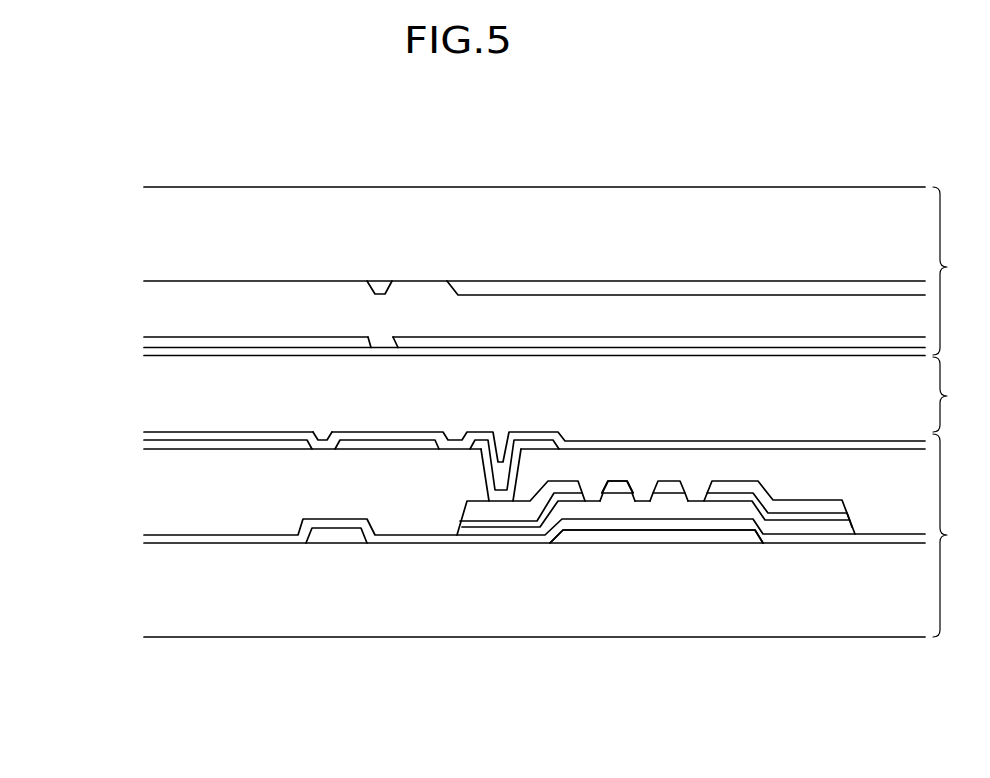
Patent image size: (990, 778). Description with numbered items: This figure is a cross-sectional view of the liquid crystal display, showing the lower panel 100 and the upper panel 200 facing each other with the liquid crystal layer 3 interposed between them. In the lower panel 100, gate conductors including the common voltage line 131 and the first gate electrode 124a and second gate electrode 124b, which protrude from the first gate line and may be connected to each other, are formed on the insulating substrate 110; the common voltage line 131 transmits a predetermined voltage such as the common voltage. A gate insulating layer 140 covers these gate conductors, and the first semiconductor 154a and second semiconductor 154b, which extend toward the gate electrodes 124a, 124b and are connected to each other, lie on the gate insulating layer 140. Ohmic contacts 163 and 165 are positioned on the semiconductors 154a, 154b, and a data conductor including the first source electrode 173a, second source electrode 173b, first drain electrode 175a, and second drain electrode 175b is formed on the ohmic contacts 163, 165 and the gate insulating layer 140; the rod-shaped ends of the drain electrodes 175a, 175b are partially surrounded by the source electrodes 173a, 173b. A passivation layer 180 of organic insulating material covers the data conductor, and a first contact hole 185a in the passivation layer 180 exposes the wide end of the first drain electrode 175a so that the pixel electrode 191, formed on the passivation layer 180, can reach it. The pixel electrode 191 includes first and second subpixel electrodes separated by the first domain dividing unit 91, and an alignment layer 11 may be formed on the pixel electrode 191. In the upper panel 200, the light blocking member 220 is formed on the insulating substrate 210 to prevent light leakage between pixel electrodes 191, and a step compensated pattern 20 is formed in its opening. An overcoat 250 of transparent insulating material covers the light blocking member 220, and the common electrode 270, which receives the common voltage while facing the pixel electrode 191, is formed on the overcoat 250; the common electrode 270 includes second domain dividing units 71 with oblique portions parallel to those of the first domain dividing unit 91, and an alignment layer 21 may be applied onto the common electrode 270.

The insulating substrate 210 is at (152, 233).
The overcoat 250 is at (152, 303).
The step compensated pattern 20 is at (379, 288).
The light blocking member 220 is at (521, 289).
The common electrode 270 is at (152, 341).
The second domain dividing unit 71 is at (393, 339).
The upper alignment layer 21 is at (150, 352).
The upper panel 200 is at (957, 271).
The liquid crystal layer 3 is at (952, 394).
The lower panel 100 is at (957, 535).
The lower alignment layer 11 is at (150, 443).
The first domain dividing unit 91 is at (332, 444).
The pixel electrode 191 is at (218, 444).
The first contact hole 185a is at (506, 462).
The passivation layer 180 is at (152, 477).
The gate insulating layer 140 is at (152, 540).
The common voltage line 131 is at (341, 536).
The insulating substrate 110 is at (152, 592).
The first gate electrode 124a is at (716, 537).
The second gate electrode 124b is at (716, 537).
The first drain electrode 175a is at (493, 510).
The ohmic contact 165 is at (547, 510).
The ohmic contact 163 is at (617, 498).
The first semiconductor 154a is at (777, 527).
The second semiconductor 154b is at (777, 527).
The first source electrode 173a is at (611, 486).
The second source electrode 173b is at (611, 486).
The second drain electrode 175b is at (667, 487).